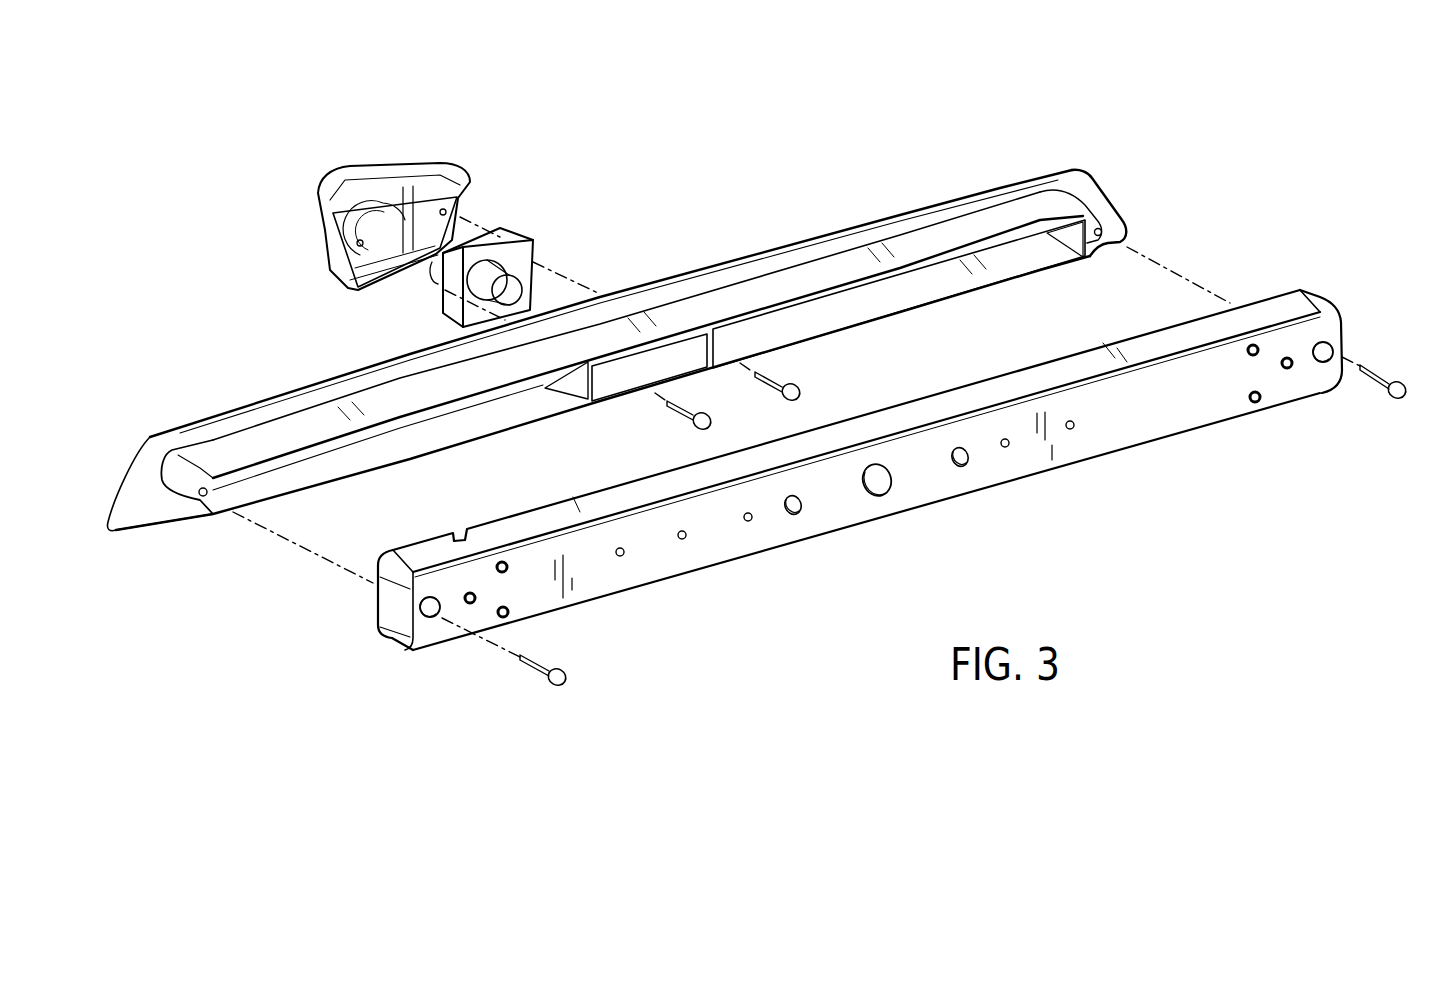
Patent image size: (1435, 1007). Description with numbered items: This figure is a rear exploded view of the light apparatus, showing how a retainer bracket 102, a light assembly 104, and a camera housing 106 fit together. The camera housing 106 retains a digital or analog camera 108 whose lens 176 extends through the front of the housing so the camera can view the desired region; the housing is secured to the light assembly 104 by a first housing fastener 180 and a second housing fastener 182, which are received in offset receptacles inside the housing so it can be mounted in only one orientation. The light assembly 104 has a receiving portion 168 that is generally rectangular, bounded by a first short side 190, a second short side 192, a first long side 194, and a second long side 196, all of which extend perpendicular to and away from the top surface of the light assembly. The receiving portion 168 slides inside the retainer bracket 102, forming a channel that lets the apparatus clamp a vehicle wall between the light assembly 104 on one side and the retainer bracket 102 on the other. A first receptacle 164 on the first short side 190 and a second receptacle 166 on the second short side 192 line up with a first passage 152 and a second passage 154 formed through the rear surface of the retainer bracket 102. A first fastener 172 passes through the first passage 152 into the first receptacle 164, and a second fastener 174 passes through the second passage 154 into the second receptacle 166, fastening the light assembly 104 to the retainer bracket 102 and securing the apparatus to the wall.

The retainer bracket 102 is at (905, 507).
The light assembly 104 is at (649, 355).
The camera housing 106 is at (394, 212).
The camera 108 is at (517, 238).
The first passage 152 is at (432, 620).
The second passage 154 is at (1340, 337).
The first receptacle 164 is at (190, 486).
The second receptacle 166 is at (1101, 224).
The receiving portion 168 is at (838, 263).
The first fastener 172 is at (542, 668).
The second fastener 174 is at (1377, 397).
The lens 176 is at (437, 272).
The first housing fastener 180 is at (683, 410).
The second housing fastener 182 is at (780, 385).
The first short side 190 is at (159, 473).
The second short side 192 is at (1116, 193).
The first long side 194 is at (700, 265).
The second long side 196 is at (478, 440).